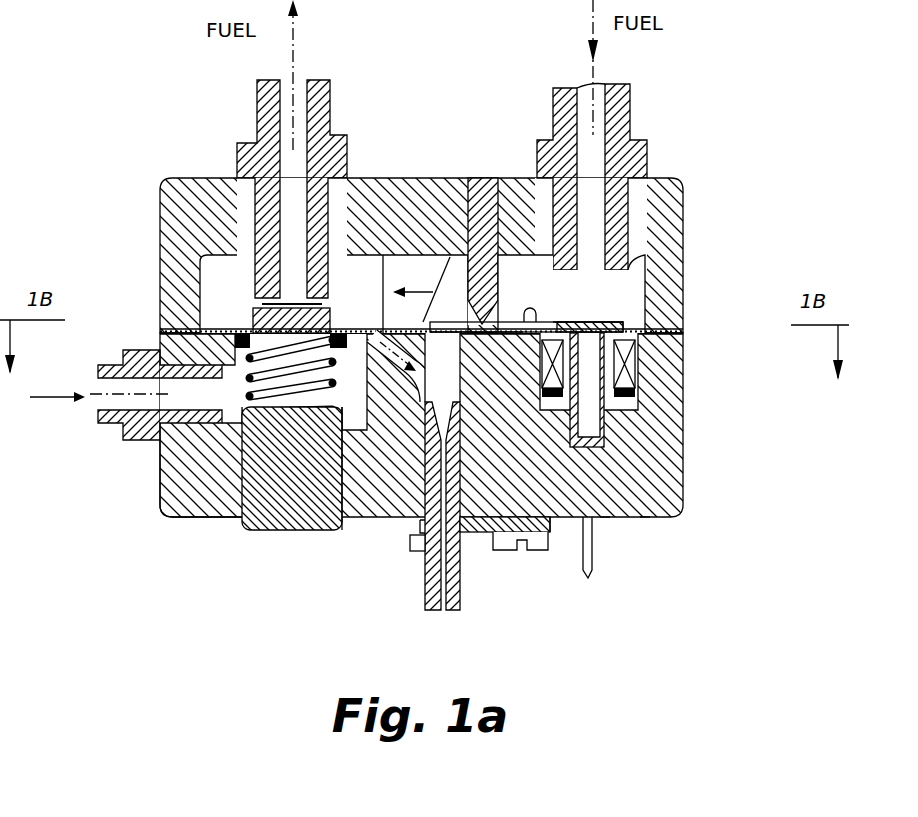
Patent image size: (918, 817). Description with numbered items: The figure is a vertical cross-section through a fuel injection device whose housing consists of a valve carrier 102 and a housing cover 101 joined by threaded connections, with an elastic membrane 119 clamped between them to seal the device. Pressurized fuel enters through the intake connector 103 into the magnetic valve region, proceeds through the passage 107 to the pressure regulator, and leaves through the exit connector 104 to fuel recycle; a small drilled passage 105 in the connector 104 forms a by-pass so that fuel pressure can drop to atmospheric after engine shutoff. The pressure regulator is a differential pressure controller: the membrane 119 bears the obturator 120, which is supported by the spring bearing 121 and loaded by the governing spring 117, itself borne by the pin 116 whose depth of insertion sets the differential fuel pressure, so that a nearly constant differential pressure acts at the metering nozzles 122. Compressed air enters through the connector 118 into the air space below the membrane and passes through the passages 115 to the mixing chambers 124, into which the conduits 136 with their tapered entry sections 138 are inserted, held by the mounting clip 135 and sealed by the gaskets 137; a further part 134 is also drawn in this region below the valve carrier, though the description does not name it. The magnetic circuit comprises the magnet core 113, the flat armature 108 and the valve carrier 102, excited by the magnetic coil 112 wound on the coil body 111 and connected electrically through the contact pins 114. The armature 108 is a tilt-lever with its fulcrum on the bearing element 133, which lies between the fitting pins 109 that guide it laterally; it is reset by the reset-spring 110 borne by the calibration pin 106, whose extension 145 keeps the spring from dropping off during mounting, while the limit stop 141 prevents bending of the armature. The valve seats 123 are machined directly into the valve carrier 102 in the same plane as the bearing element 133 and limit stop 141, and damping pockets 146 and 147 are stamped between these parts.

The housing cover 101 is at (670, 210).
The valve carrier 102 is at (665, 500).
The intake connector 103 is at (625, 110).
The exit connector 104 is at (257, 105).
The drilled passage 105 is at (363, 253).
The calibration pin 106 is at (455, 253).
The passage 107 is at (390, 283).
The flat armature 108 is at (560, 322).
The fitting pins 109 is at (538, 308).
The reset-spring 110 is at (453, 322).
The coil body 111 is at (625, 400).
The magnetic coil 112 is at (640, 362).
The magnet core 113 is at (608, 420).
The contact pins 114 is at (588, 578).
The passages 115 is at (300, 530).
The pin 116 is at (250, 535).
The governing spring 117 is at (160, 505).
The connector 118 is at (105, 428).
The membrane 119 is at (640, 330).
The obturator 120 is at (250, 300).
The spring bearing 121 is at (240, 326).
The metering nozzles 122 is at (330, 528).
The valve seats 123 is at (565, 522).
The mixing chambers 124 is at (555, 520).
The bearing element 133 is at (640, 522).
The retainer block 134 is at (505, 552).
The mounting clip 135 is at (458, 620).
The conduits 136 is at (432, 590).
The gaskets 137 is at (408, 520).
The tapered entry sections 138 is at (388, 520).
The limit stop 141 is at (600, 522).
The extension 145 is at (520, 322).
The damping pocket 146 is at (530, 320).
The damping pocket 147 is at (423, 322).